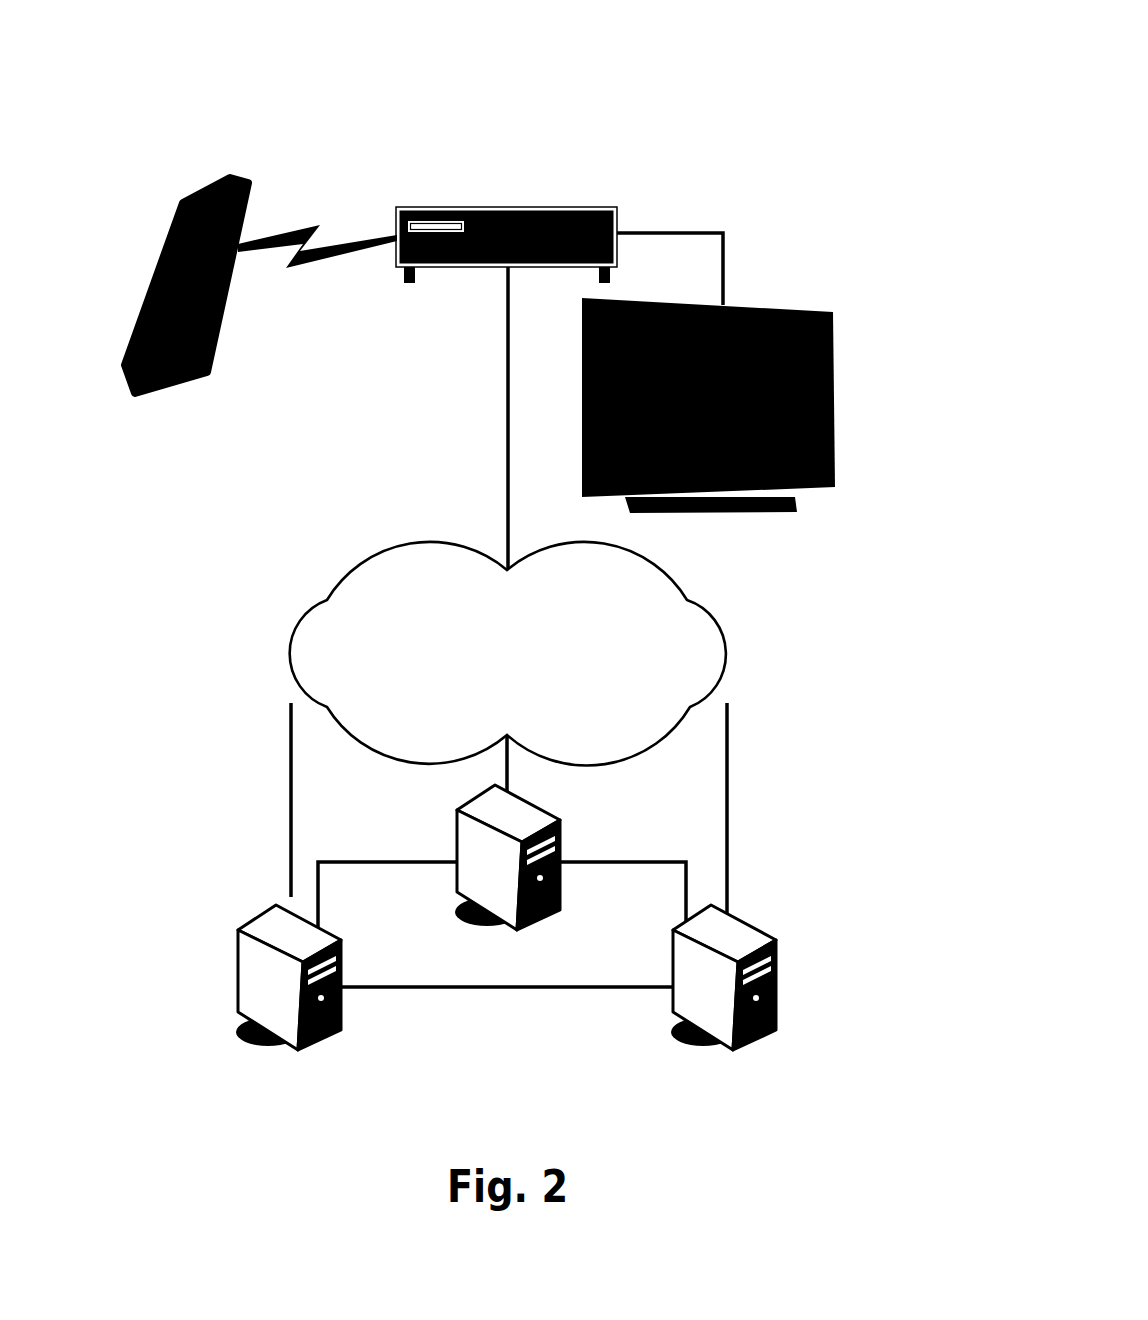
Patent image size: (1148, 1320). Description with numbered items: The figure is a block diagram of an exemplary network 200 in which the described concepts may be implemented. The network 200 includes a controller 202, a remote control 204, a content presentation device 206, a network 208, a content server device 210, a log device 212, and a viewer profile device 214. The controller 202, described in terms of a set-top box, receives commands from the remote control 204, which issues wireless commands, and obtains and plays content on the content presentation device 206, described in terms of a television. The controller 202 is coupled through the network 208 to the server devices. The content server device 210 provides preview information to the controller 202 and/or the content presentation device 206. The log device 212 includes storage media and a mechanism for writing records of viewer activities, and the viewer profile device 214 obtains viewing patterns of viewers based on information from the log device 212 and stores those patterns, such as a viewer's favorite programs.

The network 200 is at (520, 82).
The controller 202 is at (577, 207).
The remote control 204 is at (173, 378).
The content presentation device 206 is at (835, 430).
The network 208 is at (252, 653).
The content server device 210 is at (457, 807).
The log device 212 is at (238, 970).
The viewer profile device 214 is at (777, 970).